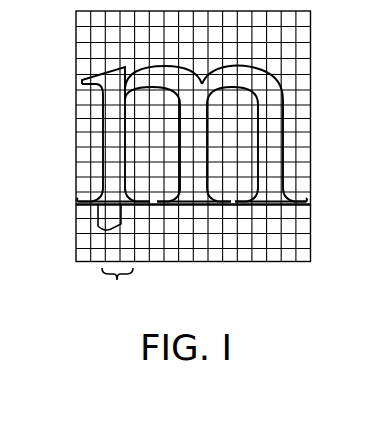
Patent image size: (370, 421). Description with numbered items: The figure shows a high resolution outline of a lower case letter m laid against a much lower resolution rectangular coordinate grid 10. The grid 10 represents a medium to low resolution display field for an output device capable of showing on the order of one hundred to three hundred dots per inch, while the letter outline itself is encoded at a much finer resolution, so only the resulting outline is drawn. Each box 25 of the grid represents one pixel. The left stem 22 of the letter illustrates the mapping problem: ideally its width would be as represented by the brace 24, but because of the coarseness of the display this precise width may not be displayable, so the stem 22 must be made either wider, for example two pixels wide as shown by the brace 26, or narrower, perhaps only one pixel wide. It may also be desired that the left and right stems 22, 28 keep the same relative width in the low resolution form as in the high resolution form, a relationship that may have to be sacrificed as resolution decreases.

The rectangular coordinate grid 10 is at (222, 136).
The left stem 22 is at (103, 131).
The brace 24 is at (107, 229).
The box 25 is at (283, 241).
The brace 26 is at (117, 288).
The right stem 28 is at (272, 158).